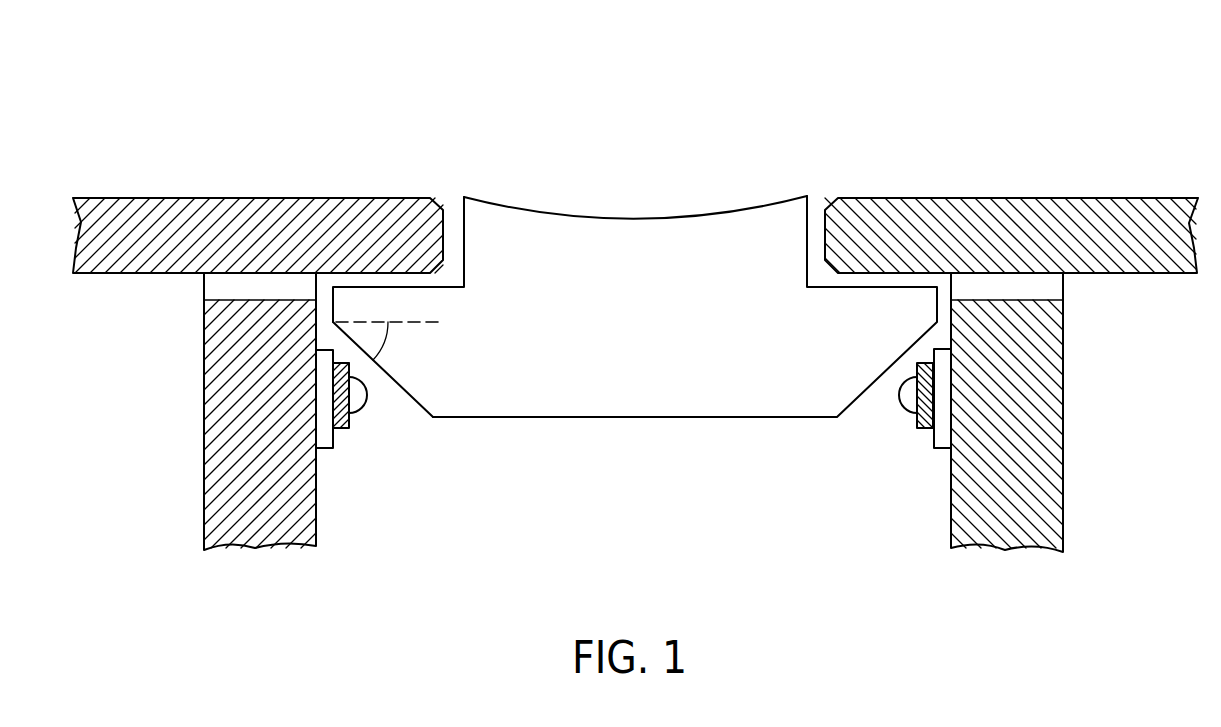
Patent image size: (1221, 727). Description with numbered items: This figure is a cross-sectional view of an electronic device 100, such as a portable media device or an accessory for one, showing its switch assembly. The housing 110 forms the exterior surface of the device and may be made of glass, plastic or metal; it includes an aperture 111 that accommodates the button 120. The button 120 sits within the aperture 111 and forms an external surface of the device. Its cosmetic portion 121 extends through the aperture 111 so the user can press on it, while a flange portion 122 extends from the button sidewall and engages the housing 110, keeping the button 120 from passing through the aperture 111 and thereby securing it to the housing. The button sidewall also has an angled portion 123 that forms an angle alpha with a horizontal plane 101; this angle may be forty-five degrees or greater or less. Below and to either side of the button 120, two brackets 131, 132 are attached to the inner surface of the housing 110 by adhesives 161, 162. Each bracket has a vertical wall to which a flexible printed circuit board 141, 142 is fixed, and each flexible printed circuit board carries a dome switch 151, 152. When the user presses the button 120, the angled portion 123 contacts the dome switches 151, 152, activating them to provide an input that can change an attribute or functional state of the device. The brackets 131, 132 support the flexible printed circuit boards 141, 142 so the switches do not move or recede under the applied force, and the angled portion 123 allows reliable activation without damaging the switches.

The electronic device 100 is at (333, 42).
The housing 110 is at (227, 215).
The aperture 111 is at (818, 165).
The button 120 is at (513, 208).
The cosmetic portion 121 is at (632, 240).
The flange portion 122 is at (887, 302).
The angled portion 123 is at (392, 383).
The horizontal plane 101 is at (415, 322).
The bracket 131 is at (204, 493).
The bracket 132 is at (1063, 453).
The flexible printed circuit board 141 is at (327, 450).
The flexible printed circuit board 142 is at (940, 450).
The dome switch 151 is at (352, 420).
The dome switch 152 is at (928, 430).
The adhesive 161 is at (223, 284).
The adhesive 162 is at (1055, 287).